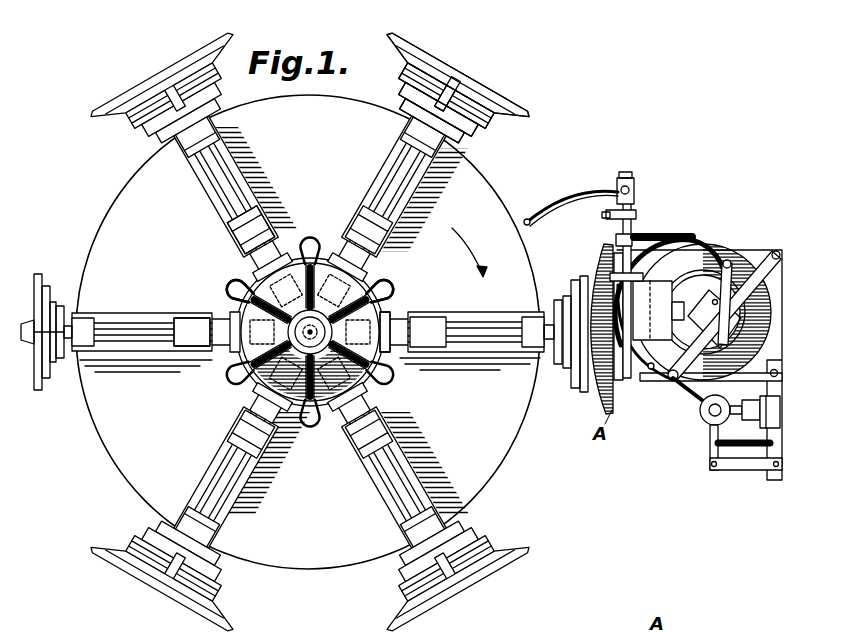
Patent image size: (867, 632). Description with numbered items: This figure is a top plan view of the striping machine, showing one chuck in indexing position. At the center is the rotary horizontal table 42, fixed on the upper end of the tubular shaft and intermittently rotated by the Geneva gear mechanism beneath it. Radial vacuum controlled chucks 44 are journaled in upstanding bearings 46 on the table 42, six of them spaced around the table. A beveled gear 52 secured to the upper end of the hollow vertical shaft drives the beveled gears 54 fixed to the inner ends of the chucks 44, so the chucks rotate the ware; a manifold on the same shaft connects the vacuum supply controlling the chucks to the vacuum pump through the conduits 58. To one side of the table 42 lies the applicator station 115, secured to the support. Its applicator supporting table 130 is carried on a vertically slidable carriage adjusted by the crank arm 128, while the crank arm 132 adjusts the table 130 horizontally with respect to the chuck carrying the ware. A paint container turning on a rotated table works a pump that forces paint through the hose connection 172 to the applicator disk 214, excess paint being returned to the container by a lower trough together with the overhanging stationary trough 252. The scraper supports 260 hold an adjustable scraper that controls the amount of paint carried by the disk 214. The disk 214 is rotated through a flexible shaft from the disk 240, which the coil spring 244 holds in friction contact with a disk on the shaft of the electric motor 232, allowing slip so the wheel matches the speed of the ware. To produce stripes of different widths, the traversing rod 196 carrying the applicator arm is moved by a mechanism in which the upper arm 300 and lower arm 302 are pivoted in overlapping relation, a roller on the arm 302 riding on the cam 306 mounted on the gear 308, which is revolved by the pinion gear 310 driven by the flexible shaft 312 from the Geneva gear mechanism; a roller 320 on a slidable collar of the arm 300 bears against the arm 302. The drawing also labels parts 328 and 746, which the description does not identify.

The rotary horizontal table 42 is at (569, 208).
The radial vacuum controlled chucks 44 is at (456, 130).
The upstanding bearings 46 is at (244, 228).
The beveled gear 52 is at (240, 298).
The beveled gears 54 is at (392, 312).
The conduits 58 is at (380, 293).
The crank arm 128 is at (447, 64).
The applicator supporting table 130 is at (469, 70).
The crank arm 132 is at (483, 78).
The hose connection 172 is at (711, 252).
The traversing rod 196 is at (651, 373).
The applicator station 115 is at (727, 262).
The applicator disk 214 is at (659, 262).
The electric motor 232 is at (764, 432).
The disk 240 is at (715, 398).
The coil spring 244 is at (736, 452).
The overhanging stationary trough 252 is at (658, 310).
The scraper supports 260 is at (703, 312).
The upper arm 300 is at (639, 232).
The lower arm 302 is at (613, 216).
The cam 306 is at (632, 195).
The gear 308 is at (611, 199).
The pinion gear 310 is at (629, 182).
The flexible shaft 312 is at (547, 230).
The roller 320 is at (611, 241).
The bracket 328 is at (707, 430).
The frame 746 is at (758, 240).